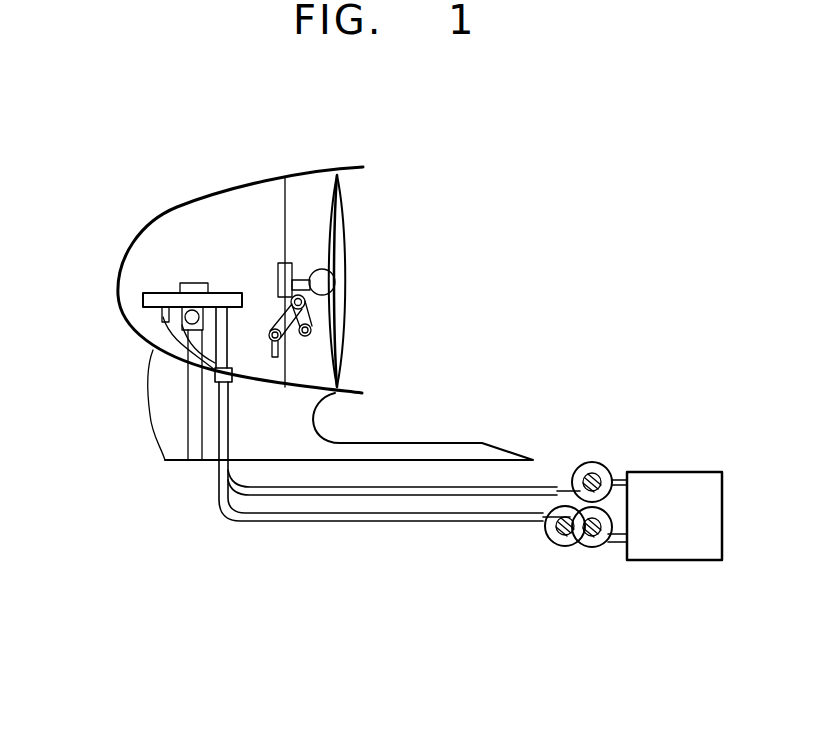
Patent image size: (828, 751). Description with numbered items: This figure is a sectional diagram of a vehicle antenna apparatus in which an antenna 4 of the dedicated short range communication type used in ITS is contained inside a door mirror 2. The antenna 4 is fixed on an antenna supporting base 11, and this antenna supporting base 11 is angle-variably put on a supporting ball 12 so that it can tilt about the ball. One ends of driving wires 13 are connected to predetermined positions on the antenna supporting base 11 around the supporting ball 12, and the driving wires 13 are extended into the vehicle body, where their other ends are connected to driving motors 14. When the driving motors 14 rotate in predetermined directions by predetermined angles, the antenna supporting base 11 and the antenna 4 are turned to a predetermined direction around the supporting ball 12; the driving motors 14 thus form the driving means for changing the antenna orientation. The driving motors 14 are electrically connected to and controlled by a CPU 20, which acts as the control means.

The door mirror 2 is at (177, 207).
The antenna 4 is at (200, 283).
The antenna supporting base 11 is at (157, 290).
The supporting ball 12 is at (150, 323).
The driving wires 13 is at (217, 483).
The driving motors 14 is at (592, 462).
The CPU 20 is at (717, 472).